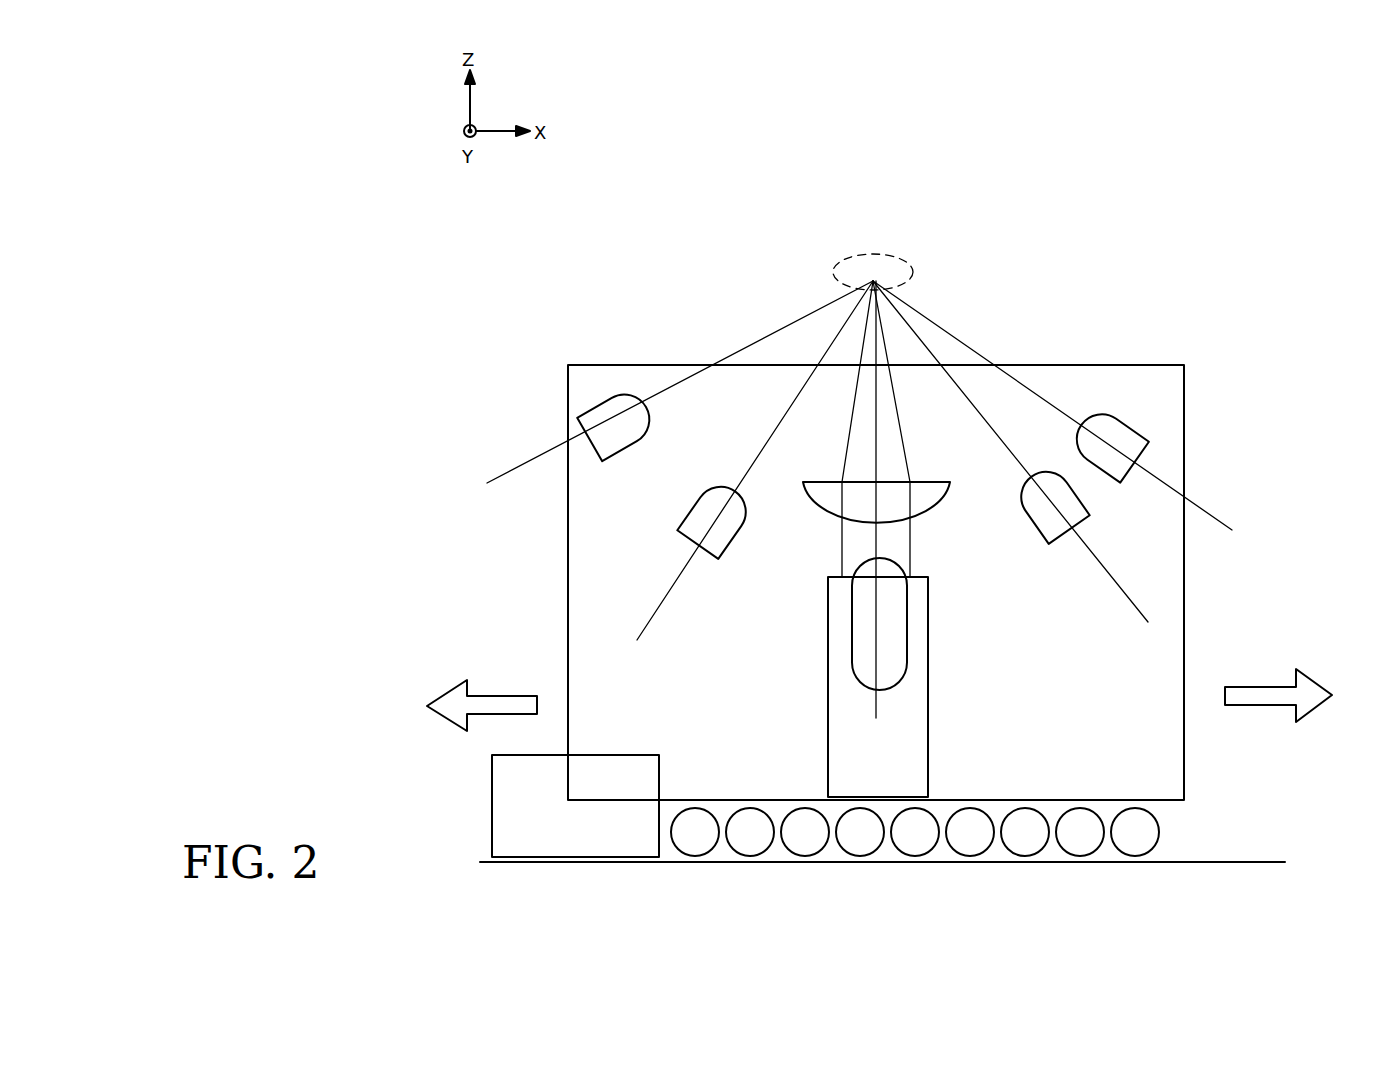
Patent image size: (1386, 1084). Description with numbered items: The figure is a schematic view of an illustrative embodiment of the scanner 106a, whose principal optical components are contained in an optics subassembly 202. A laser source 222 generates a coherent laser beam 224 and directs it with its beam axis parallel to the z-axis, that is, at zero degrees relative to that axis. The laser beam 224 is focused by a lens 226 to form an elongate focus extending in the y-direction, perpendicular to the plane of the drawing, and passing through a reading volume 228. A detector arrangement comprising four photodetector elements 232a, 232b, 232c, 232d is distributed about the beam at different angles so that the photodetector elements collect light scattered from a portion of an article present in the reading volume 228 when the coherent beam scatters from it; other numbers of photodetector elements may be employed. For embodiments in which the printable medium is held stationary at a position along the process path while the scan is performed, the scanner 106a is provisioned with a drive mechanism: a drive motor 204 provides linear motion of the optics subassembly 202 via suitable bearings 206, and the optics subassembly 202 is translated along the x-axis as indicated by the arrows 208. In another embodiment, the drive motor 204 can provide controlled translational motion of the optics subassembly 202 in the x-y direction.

The scanner 106a is at (1181, 231).
The optics subassembly 202 is at (1185, 638).
The drive motor 204 is at (563, 848).
The bearings 206 is at (697, 858).
The arrows 208 is at (520, 695).
The laser source 222 is at (928, 712).
The laser beam 224 is at (904, 447).
The lens 226 is at (936, 512).
The reading volume 228 is at (856, 258).
The photodetector element 232a is at (627, 450).
The photodetector element 232b is at (732, 548).
The photodetector element 232c is at (1034, 522).
The photodetector element 232d is at (1118, 482).